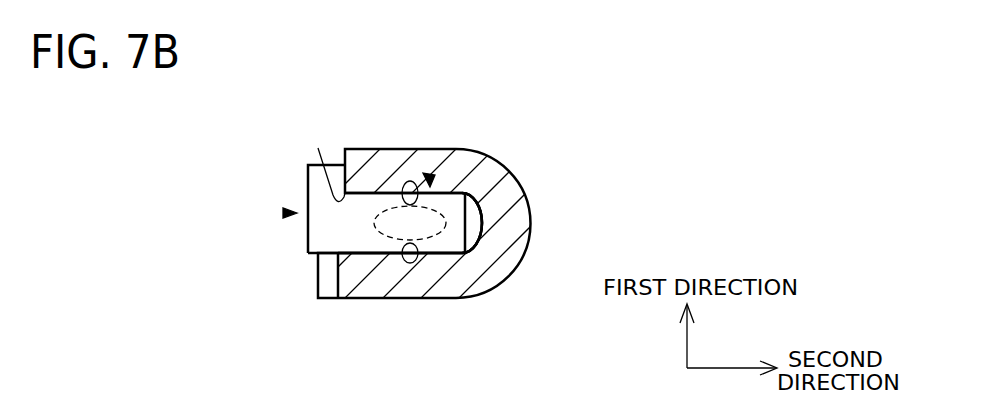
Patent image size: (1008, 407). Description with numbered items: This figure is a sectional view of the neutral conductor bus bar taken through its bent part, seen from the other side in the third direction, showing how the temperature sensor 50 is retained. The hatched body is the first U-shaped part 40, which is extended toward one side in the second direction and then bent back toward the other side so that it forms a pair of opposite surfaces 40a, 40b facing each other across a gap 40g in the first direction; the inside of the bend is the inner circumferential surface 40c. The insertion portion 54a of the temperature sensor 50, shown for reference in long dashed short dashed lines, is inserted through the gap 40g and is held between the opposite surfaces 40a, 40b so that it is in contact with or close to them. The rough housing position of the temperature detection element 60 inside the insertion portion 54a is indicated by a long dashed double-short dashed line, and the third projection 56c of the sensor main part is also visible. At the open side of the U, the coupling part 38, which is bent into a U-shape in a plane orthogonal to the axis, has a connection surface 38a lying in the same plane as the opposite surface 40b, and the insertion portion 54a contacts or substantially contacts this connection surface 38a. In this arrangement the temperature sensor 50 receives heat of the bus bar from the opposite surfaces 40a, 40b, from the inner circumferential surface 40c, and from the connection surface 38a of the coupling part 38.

The coupling part 38 is at (345, 148).
The connection surface 38a is at (318, 148).
The first U-shaped part 40 is at (530, 247).
The opposite surface 40a is at (402, 255).
The opposite surface 40b is at (397, 192).
The inner circumferential surface 40c is at (470, 243).
The gap 40g is at (476, 218).
The temperature sensor 50 is at (285, 213).
The insertion portion 54a is at (431, 180).
The third projection 56c is at (316, 179).
The temperature detection element 60 is at (372, 224).